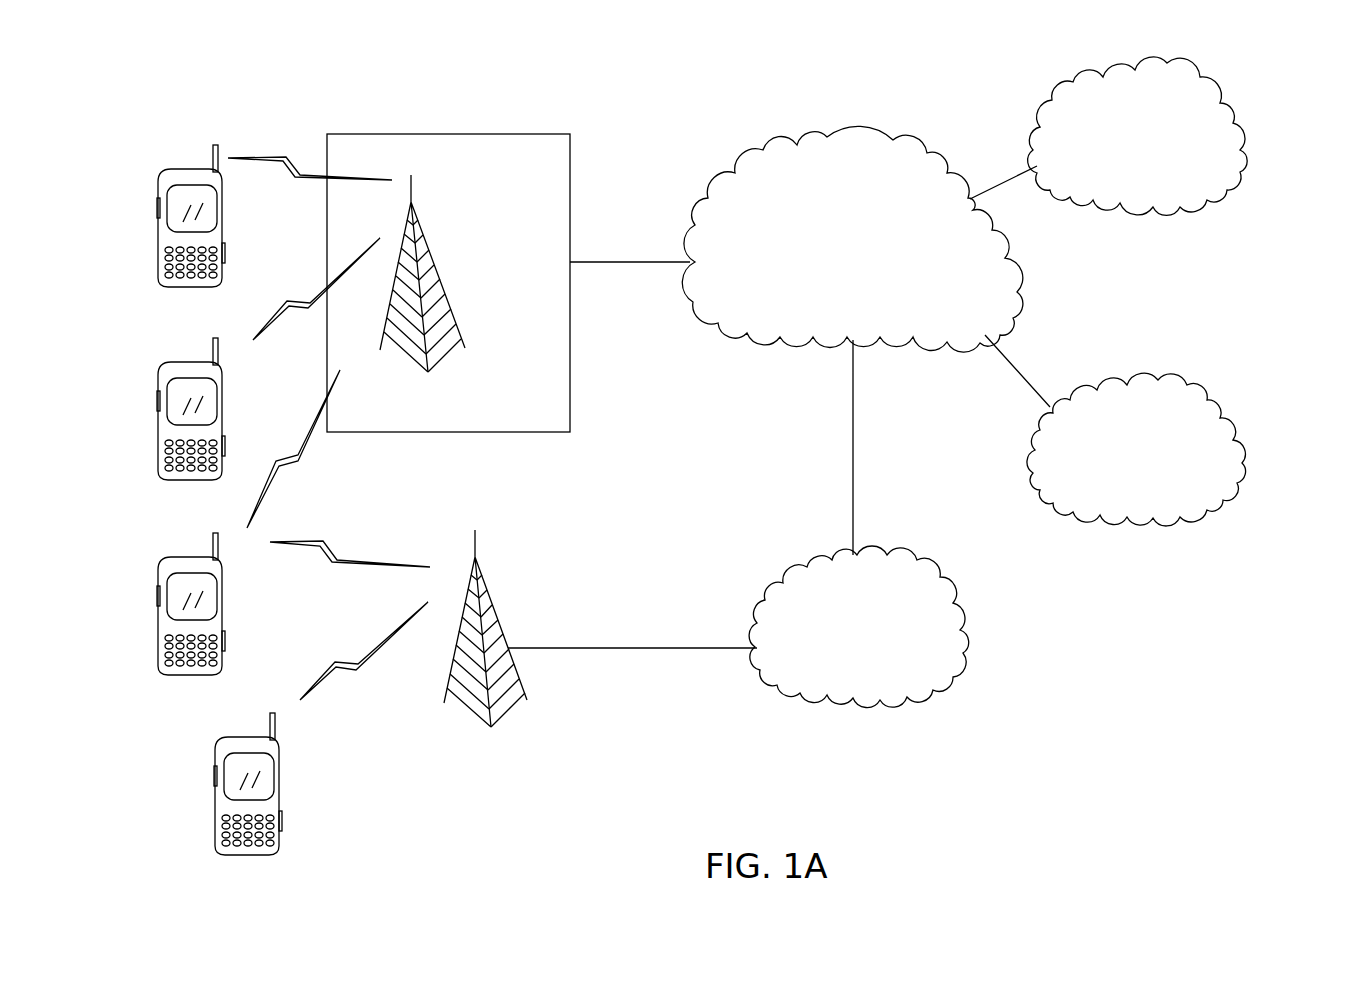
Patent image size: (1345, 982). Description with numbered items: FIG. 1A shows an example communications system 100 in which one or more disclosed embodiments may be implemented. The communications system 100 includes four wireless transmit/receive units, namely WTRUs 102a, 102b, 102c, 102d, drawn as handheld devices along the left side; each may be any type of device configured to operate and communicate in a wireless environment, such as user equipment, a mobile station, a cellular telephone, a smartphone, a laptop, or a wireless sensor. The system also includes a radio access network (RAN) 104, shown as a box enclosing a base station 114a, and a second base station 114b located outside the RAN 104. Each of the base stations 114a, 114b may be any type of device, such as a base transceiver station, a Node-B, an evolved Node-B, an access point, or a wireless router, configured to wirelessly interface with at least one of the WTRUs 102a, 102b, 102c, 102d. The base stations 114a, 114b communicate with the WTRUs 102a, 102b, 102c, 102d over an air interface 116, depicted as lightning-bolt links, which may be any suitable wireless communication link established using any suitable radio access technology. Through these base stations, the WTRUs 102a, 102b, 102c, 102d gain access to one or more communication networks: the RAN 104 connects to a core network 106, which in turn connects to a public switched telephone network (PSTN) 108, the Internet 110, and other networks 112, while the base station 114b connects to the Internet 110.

The communications system 100 is at (1340, 46).
The WTRU 102a is at (202, 287).
The WTRU 102b is at (202, 480).
The WTRU 102c is at (202, 675).
The WTRU 102d is at (259, 855).
The radio access network (RAN) 104 is at (427, 134).
The core network 106 is at (865, 124).
The public switched telephone network (PSTN) 108 is at (1190, 211).
The Internet 110 is at (885, 556).
The other networks 112 is at (1165, 380).
The base station 114a is at (428, 372).
The base station 114b is at (491, 727).
The air interface 116 is at (262, 165).